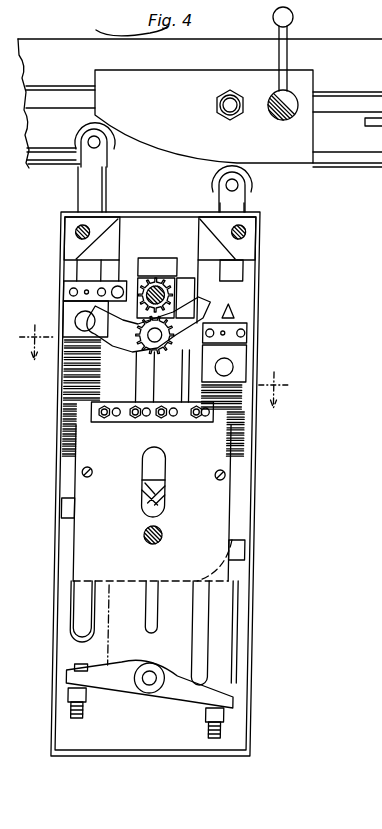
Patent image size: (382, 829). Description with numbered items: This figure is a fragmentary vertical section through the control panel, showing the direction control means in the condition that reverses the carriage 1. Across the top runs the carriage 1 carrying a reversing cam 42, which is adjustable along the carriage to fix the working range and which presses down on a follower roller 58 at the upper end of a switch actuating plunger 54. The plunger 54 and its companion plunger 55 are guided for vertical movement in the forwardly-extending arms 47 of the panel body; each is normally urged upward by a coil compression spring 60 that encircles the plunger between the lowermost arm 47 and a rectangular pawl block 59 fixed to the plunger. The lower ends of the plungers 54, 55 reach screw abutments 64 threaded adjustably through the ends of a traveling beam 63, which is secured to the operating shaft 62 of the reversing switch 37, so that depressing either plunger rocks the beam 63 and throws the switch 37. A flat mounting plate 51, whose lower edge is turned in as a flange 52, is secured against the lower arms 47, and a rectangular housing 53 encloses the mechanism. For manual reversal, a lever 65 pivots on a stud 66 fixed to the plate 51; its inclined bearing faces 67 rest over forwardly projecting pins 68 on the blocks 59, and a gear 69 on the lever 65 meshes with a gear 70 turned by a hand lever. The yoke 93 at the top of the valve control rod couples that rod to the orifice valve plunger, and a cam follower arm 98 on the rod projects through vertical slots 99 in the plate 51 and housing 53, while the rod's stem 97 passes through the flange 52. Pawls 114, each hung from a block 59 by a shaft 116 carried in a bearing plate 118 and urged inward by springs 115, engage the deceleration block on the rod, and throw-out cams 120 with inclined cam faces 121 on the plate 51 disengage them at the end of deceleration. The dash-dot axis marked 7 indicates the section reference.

The carriage 1 is at (340, 56).
The cam 42 is at (213, 76).
The follower roller 58 is at (78, 133).
The switch actuating plunger 54 is at (78, 188).
The switch actuating plunger 55 is at (250, 205).
The yoke 93 is at (157, 258).
The arm 47 is at (70, 225).
The shaft 116 is at (120, 287).
The gear 70 is at (186, 282).
The bearing plate 118 is at (80, 283).
The bearing face 67 is at (95, 304).
The pawl block 59 is at (72, 314).
The pin 68 is at (80, 322).
The stud 66 is at (168, 310).
The gear 69 is at (166, 331).
The lever 65 is at (238, 326).
The pawl 114 is at (74, 381).
The coil compression spring 60 is at (68, 403).
The axis 7 is at (154, 380).
The cam face 121 is at (138, 400).
The throw-out cam 120 is at (151, 421).
The coil compression spring 115 is at (208, 420).
The cam follower arm 98 is at (147, 490).
The vertical slot 99 is at (152, 527).
The mounting plate 51 is at (226, 521).
The flange 52 is at (252, 553).
The housing 53 is at (256, 586).
The stem 97 is at (153, 621).
The switch 37 is at (193, 638).
The traveling beam 63 is at (124, 689).
The operating shaft 62 is at (158, 693).
The screw abutment 64 is at (79, 718).